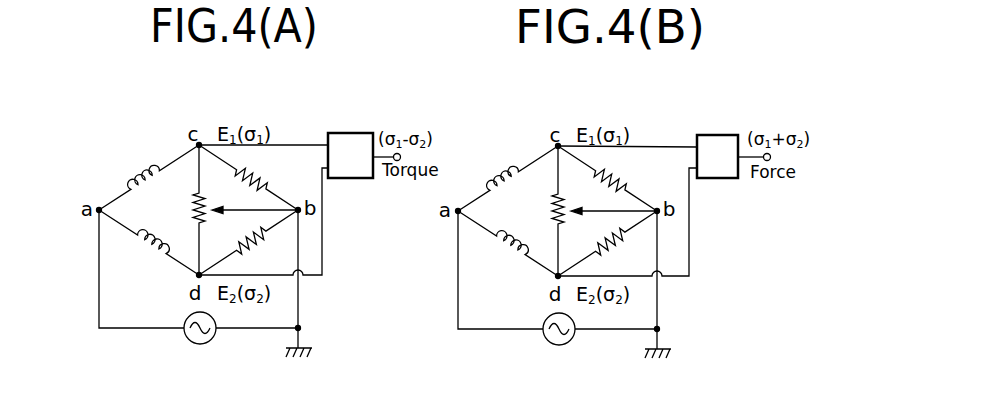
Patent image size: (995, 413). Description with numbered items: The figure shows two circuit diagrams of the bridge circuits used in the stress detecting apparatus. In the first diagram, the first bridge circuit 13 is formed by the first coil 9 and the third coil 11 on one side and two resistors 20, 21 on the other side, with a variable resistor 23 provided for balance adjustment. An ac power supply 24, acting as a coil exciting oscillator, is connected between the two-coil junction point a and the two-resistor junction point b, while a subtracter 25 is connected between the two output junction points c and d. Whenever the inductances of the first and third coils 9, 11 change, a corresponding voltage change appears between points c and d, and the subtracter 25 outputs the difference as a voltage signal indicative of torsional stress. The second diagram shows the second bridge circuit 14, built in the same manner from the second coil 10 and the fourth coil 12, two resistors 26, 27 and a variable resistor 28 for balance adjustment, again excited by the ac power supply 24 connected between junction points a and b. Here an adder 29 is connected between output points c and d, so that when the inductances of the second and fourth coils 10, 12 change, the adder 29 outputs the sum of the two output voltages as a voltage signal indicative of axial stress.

In FIG. 4A, the first coil 9 is at (138, 172).
In FIG. 4B, the second coil 10 is at (508, 178).
In FIG. 4A, the third coil 11 is at (146, 251).
In FIG. 4B, the fourth coil 12 is at (508, 249).
In FIG. 4A, the first bridge circuit 13 is at (174, 149).
In FIG. 4B, the second bridge circuit 14 is at (560, 183).
In FIG. 4A, the resistor 20 is at (255, 176).
In FIG. 4A, the resistor 21 is at (257, 247).
In FIG. 4A, the variable resistor 23 is at (205, 198).
In FIG. 4A, the ac power supply 24 is at (200, 344).
In FIG. 4B, the ac power supply 24 is at (559, 347).
In FIG. 4A, the subtracter 25 is at (371, 133).
In FIG. 4B, the resistor 26 is at (607, 178).
In FIG. 4B, the resistor 27 is at (607, 243).
In FIG. 4B, the variable resistor 28 is at (604, 211).
In FIG. 4B, the adder 29 is at (720, 135).